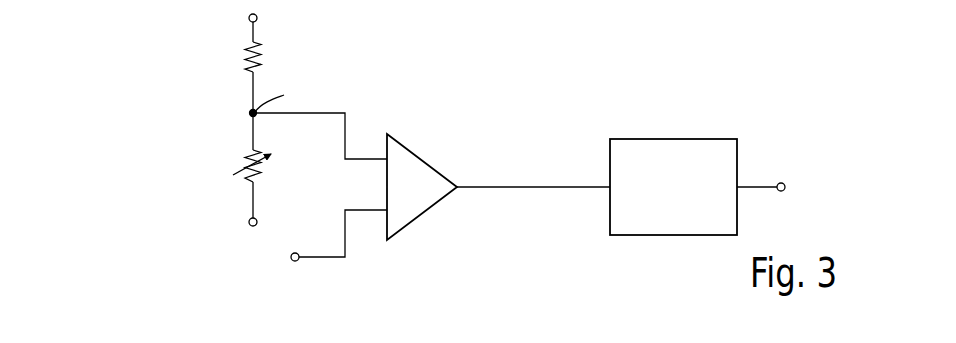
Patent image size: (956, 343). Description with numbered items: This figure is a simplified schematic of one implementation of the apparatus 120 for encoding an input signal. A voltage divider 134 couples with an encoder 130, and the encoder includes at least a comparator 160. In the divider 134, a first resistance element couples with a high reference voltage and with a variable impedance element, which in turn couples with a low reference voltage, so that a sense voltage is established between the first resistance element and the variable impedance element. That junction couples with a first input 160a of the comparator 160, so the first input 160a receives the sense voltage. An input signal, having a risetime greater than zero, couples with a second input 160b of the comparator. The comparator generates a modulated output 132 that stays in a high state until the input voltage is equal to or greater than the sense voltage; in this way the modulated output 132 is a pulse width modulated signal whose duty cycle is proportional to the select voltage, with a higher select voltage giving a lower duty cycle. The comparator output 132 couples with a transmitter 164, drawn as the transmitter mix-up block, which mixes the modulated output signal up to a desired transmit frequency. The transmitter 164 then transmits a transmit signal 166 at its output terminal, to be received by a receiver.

The voltage divider 134 is at (171, 41).
The apparatus 120 is at (447, 124).
The encoder 130 is at (558, 124).
The comparator 160 is at (428, 196).
The first input 160a is at (380, 157).
The second input 160b is at (371, 212).
The modulated output 132 is at (462, 190).
The transmitter 164 is at (728, 228).
The transmit signal 166 is at (783, 182).